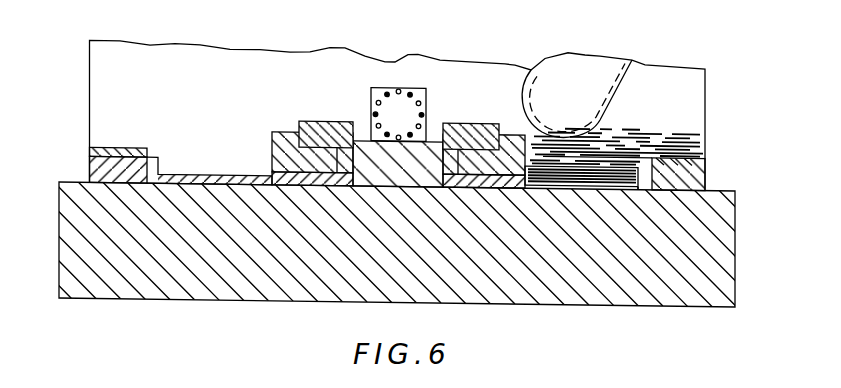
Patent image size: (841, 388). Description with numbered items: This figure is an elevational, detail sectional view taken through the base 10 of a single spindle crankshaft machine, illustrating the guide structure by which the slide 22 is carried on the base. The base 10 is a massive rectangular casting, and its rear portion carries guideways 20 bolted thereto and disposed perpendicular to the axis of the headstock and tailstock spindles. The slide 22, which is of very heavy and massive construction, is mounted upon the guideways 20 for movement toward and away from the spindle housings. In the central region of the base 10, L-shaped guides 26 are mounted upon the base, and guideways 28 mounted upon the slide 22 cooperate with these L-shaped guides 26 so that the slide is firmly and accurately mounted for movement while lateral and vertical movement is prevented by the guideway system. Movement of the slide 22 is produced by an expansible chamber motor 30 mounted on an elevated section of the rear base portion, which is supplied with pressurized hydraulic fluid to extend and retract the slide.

The base 10 is at (85, 270).
The guideways 20 is at (97, 162).
The slide 22 is at (122, 101).
The L-shaped guides 26 is at (323, 135).
The guideways 28 is at (285, 148).
The expansible chamber motor 30 is at (400, 100).